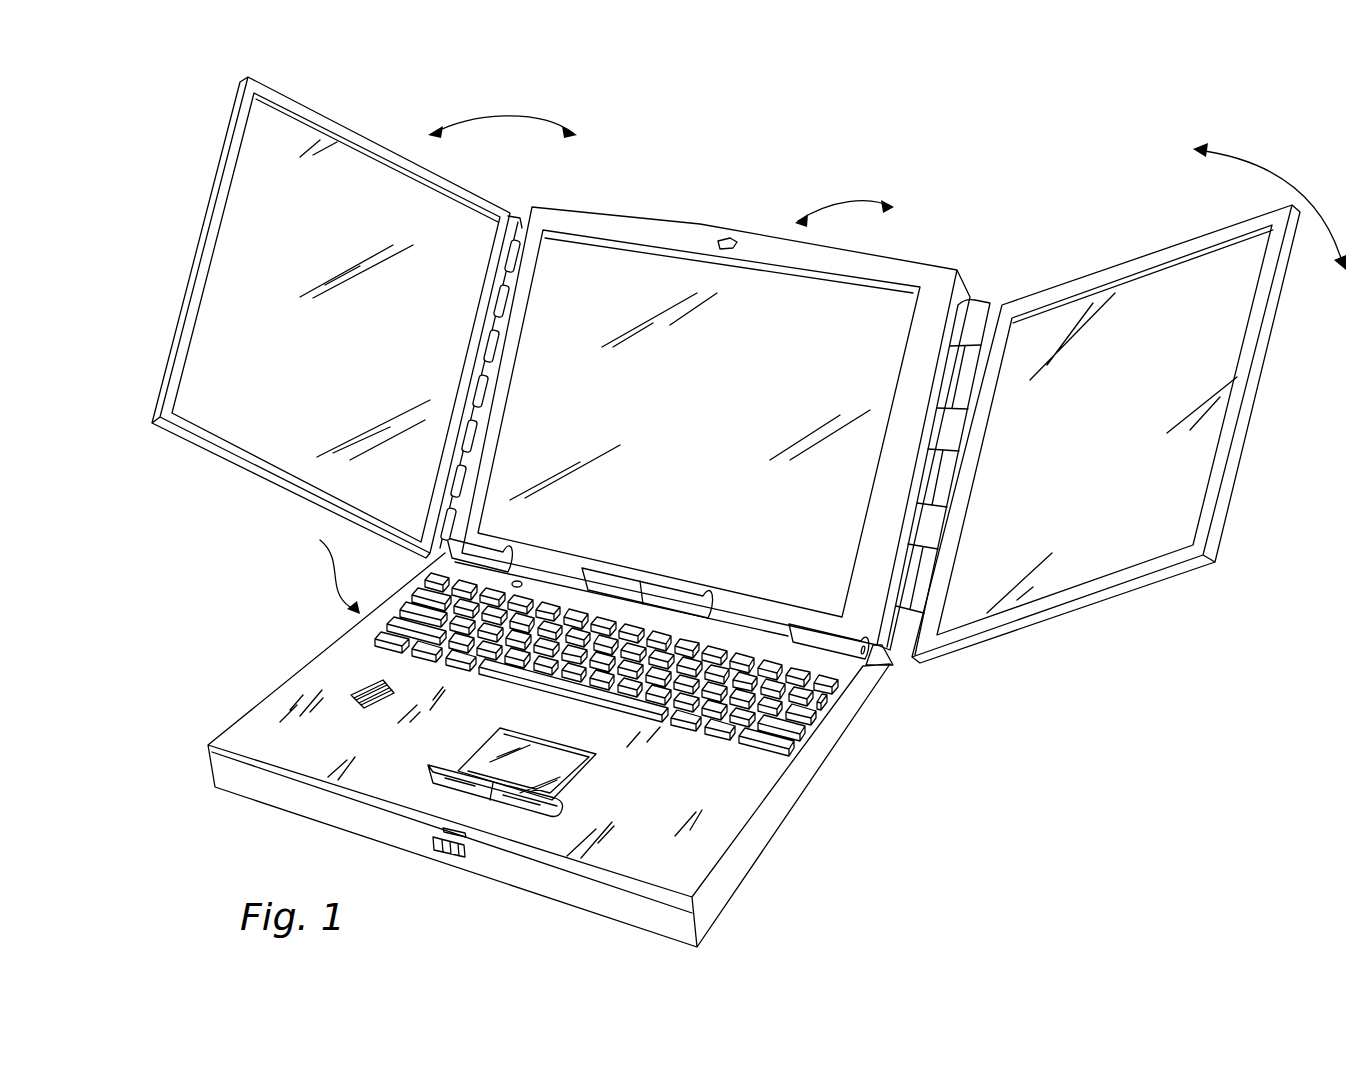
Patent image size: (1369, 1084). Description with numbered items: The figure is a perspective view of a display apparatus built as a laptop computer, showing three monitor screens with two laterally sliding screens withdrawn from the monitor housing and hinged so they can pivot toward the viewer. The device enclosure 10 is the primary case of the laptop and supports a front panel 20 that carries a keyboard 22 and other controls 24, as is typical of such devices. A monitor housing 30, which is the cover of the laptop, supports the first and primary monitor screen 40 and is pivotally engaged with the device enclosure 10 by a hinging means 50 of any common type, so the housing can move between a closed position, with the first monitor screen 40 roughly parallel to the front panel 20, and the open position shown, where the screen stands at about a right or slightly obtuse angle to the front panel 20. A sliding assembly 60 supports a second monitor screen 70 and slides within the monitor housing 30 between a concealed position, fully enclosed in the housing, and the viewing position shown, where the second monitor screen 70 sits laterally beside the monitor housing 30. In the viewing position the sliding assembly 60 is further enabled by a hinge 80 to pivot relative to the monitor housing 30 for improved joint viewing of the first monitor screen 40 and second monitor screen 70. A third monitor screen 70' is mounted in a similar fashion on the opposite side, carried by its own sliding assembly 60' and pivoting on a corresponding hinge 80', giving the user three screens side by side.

The device enclosure 10 is at (783, 820).
The front panel 20 is at (658, 801).
The keyboard 22 is at (326, 566).
The other controls 24 is at (405, 794).
The monitor housing 30 is at (621, 233).
The first monitor screen 40 is at (736, 398).
The hinging means 50 is at (442, 556).
The sliding assembly 60 is at (1106, 454).
The sliding assembly 60' is at (331, 321).
The second monitor screen 70 is at (1120, 430).
The third monitor screen 70' is at (336, 310).
The hinge 80 is at (947, 444).
The hinge 80' is at (481, 354).